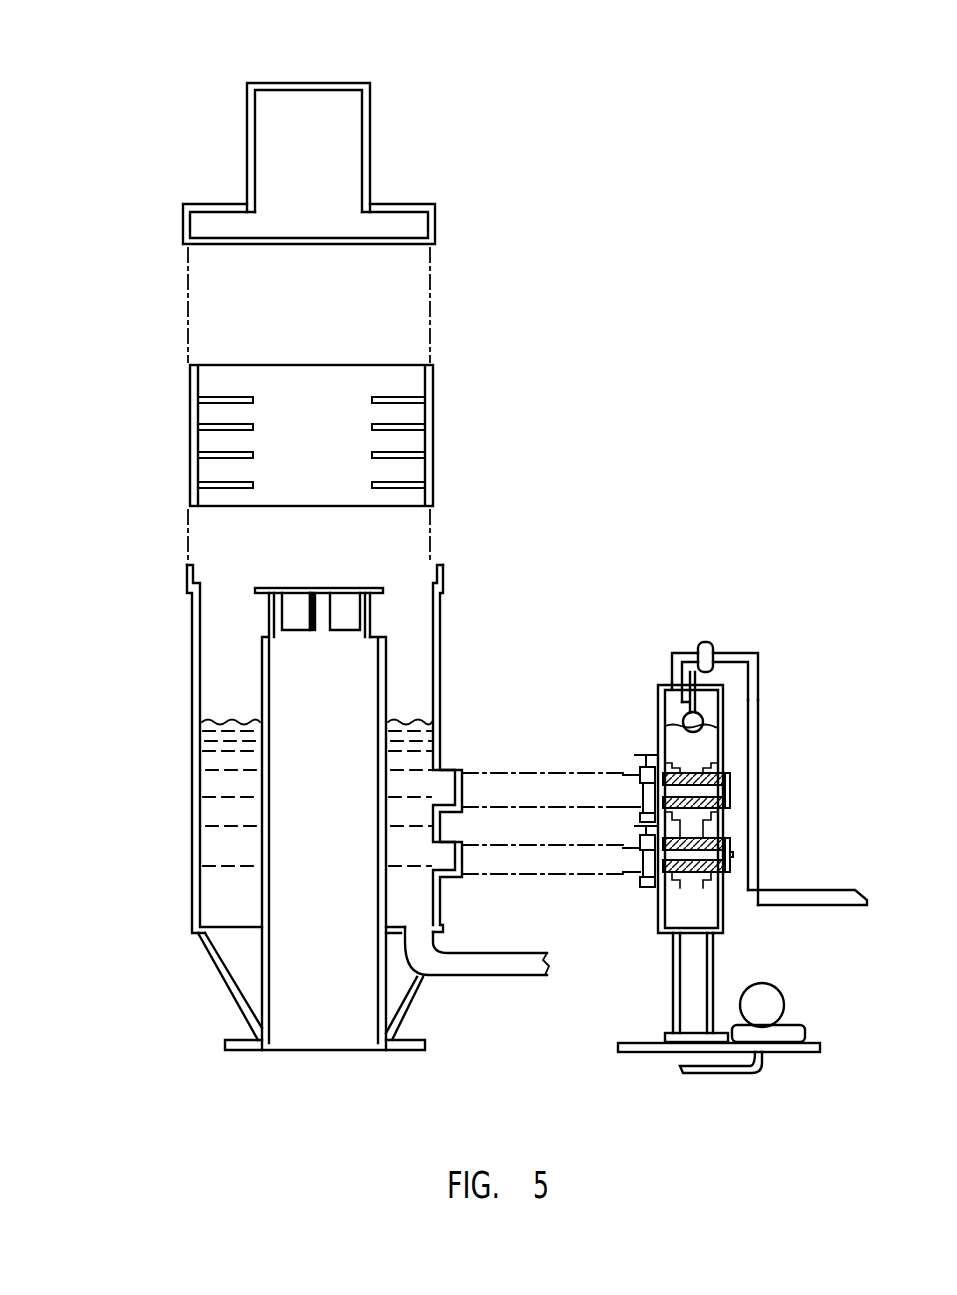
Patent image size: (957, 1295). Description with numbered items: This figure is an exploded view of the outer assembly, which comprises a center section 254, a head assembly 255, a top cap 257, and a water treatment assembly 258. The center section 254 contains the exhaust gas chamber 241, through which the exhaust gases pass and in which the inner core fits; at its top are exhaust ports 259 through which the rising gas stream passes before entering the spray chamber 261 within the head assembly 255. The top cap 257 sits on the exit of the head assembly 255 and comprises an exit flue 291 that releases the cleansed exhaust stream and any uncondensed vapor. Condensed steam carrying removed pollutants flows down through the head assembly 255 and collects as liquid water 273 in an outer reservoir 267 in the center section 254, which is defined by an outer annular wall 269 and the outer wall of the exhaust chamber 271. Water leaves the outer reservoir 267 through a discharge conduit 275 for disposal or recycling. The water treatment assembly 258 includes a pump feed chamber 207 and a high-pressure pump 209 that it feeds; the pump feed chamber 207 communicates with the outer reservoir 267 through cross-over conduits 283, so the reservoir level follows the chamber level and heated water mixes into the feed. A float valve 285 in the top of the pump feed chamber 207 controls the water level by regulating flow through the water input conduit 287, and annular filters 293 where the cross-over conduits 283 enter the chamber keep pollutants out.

The exit flue 291 is at (308, 110).
The top cap 257 is at (440, 222).
The head assembly 255 is at (376, 435).
The spray chamber 261 is at (347, 427).
The exhaust ports 259 is at (340, 613).
The exhaust gas chamber 241 is at (241, 790).
The outer wall of the exhaust chamber 271 is at (268, 847).
The outer annular wall 269 is at (258, 807).
The center section 254 is at (200, 840).
The liquid water 273 is at (215, 748).
The outer reservoir 267 is at (215, 783).
The cross-over conduits 283 is at (447, 863).
The discharge conduit 275 is at (473, 965).
The water treatment assembly 258 is at (768, 641).
The float valve 285 is at (705, 648).
The water input conduit 287 is at (762, 838).
The pump feed chamber 207 is at (697, 912).
The annular filters 293 is at (715, 830).
The high-pressure pump 209 is at (758, 1005).